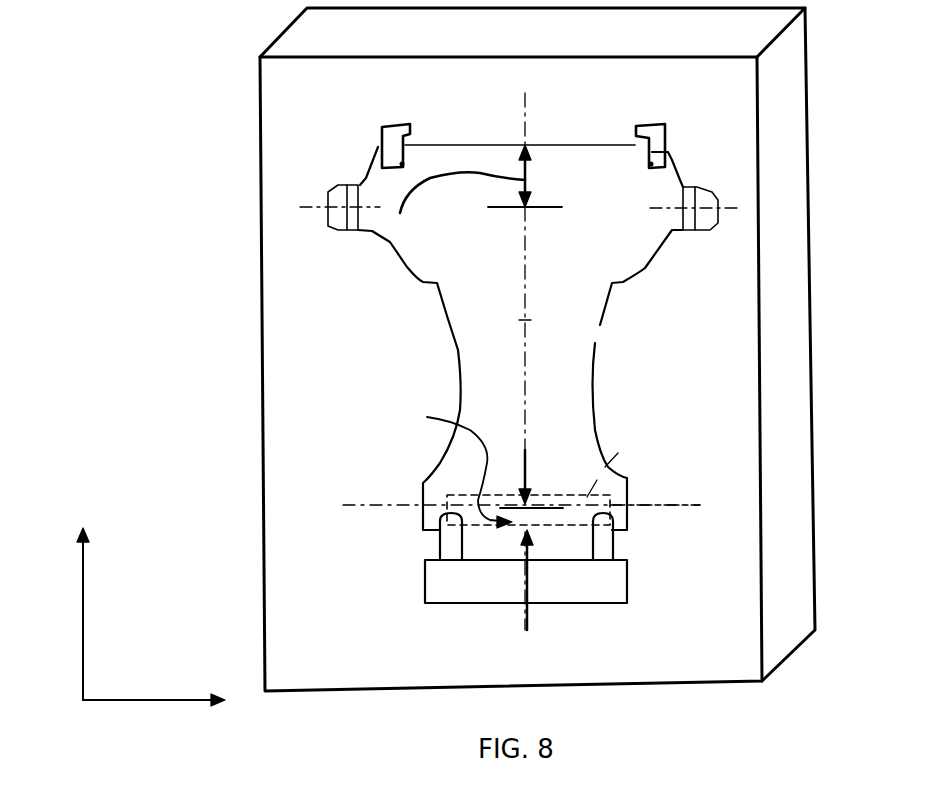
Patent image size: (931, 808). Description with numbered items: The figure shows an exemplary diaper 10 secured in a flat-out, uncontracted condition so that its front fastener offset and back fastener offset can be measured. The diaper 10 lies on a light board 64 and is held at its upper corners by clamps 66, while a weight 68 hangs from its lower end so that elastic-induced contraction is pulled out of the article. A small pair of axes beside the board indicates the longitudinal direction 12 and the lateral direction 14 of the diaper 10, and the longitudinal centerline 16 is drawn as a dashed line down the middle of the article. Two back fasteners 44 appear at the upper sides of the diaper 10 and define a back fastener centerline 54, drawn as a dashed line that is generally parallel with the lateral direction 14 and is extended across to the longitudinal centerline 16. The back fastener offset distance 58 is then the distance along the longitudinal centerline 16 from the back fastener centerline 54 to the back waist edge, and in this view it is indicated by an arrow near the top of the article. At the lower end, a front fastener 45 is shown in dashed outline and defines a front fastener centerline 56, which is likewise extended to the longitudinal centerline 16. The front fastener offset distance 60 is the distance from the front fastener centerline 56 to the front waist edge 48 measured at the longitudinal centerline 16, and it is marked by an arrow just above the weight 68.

The diaper 10 is at (371, 282).
The longitudinal direction 12 is at (83, 625).
The lateral direction 14 is at (163, 702).
The longitudinal centerline 16 is at (525, 113).
The back fastener 44 is at (485, 147).
The front fastener 45 is at (632, 440).
The front waist edge 48 is at (430, 533).
The back fastener centerline 54 is at (300, 207).
The front fastener centerline 56 is at (663, 508).
The back fastener offset distance 58 is at (462, 207).
The front fastener offset distance 60 is at (441, 469).
The light board 64 is at (713, 610).
The clamps 66 is at (387, 123).
The weight 68 is at (483, 588).